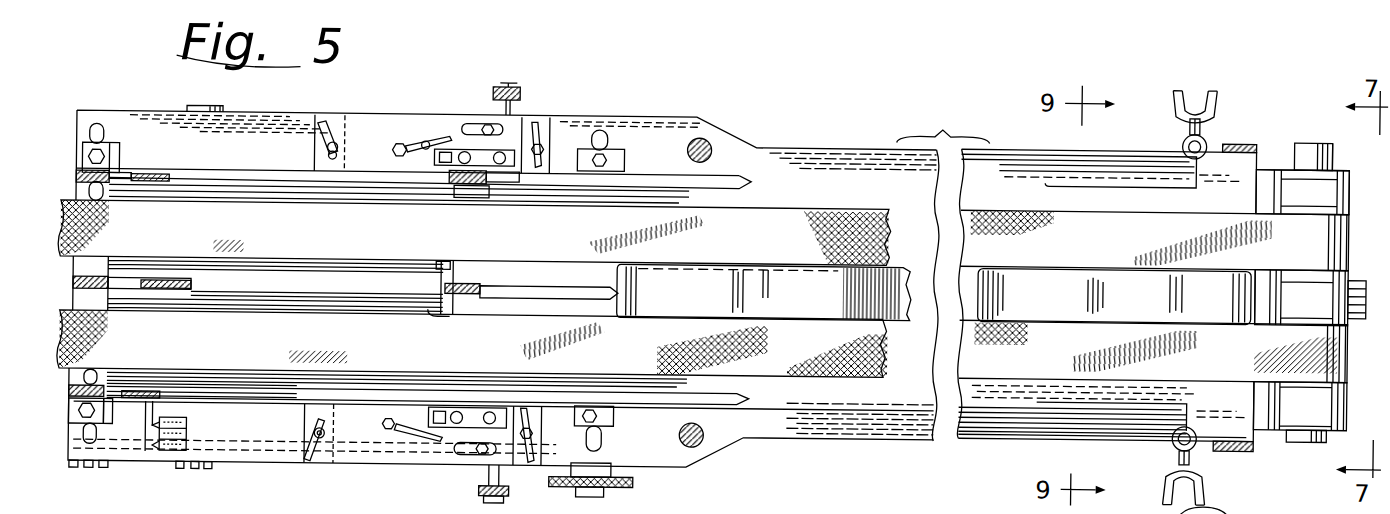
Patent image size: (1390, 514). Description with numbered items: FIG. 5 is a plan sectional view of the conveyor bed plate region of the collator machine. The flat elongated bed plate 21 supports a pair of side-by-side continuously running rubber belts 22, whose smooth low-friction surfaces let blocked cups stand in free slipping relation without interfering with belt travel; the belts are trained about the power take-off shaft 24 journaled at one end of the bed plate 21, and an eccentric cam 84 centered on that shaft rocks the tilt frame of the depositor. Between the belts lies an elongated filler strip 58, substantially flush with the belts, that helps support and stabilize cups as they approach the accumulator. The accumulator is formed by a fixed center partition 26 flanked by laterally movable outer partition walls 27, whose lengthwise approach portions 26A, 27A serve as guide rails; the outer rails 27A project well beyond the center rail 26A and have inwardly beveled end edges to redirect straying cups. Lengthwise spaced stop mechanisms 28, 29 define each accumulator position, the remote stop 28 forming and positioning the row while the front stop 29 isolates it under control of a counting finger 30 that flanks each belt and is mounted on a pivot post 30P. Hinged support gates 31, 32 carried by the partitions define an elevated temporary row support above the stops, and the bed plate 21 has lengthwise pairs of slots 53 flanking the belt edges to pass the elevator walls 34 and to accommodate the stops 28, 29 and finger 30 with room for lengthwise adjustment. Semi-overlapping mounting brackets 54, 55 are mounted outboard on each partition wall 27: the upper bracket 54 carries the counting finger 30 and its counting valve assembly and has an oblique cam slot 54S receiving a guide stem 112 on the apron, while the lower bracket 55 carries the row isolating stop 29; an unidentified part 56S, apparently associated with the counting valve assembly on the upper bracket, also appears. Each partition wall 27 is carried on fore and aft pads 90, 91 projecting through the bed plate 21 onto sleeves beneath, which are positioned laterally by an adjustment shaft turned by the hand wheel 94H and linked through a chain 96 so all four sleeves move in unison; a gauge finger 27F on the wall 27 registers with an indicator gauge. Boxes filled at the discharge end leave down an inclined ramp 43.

The bed plate 21 is at (1116, 295).
The rubber belts 22 is at (703, 291).
The power take-off shaft 24 is at (1290, 393).
The center partition 26 is at (470, 289).
The approach portion of center partition 26A is at (568, 290).
The outer partition wall 27 is at (436, 190).
The approach portion of outer partition 27A is at (723, 174).
The gauge finger 27F is at (149, 450).
The stop mechanism 28 is at (153, 262).
The stop mechanism 29 is at (478, 196).
The counting finger 30 is at (405, 186).
The pivot post 30P is at (428, 142).
The support gate 31 is at (277, 278).
The support gate 32 is at (268, 360).
The vertical walls 34 is at (318, 262).
The inclined ramp 43 is at (193, 442).
The slots 53 is at (191, 196).
The upper mounting bracket 54 is at (304, 431).
The oblique cam slot 54S is at (332, 136).
The lower mounting bracket 55 is at (562, 378).
The spring 56S is at (524, 458).
The filler strip 58 is at (1115, 296).
The eccentric cam 84 is at (1288, 289).
The pad 90 is at (617, 411).
The pad 91 is at (120, 420).
The hand wheel 94H is at (640, 477).
The link chain 96 is at (440, 447).
The guide stem 112 is at (271, 412).